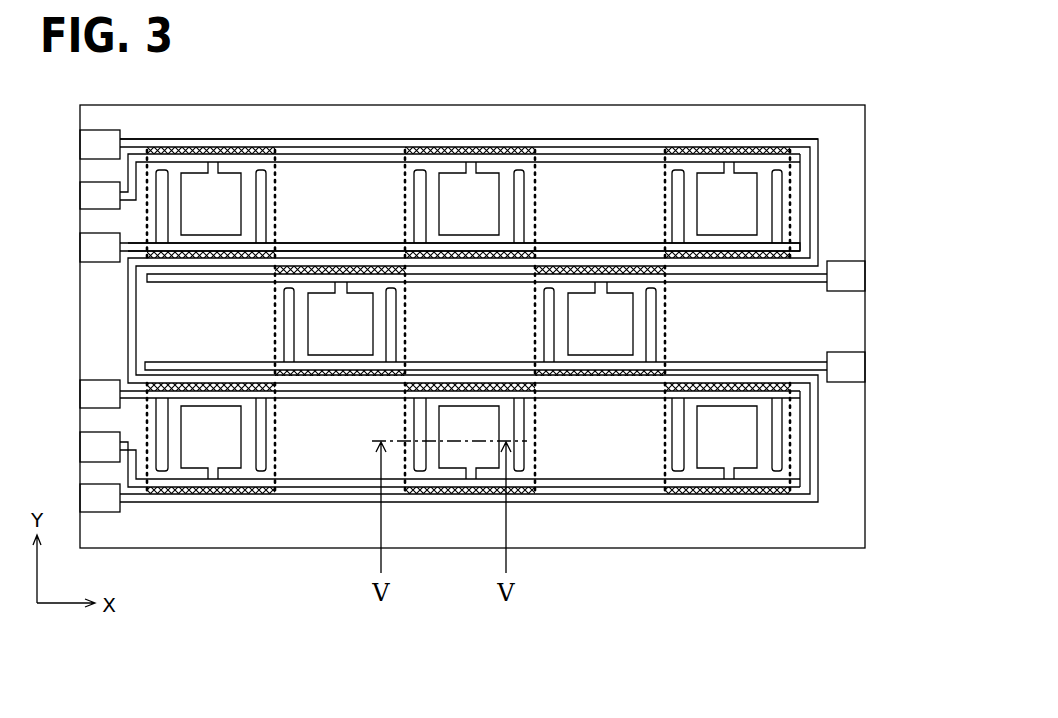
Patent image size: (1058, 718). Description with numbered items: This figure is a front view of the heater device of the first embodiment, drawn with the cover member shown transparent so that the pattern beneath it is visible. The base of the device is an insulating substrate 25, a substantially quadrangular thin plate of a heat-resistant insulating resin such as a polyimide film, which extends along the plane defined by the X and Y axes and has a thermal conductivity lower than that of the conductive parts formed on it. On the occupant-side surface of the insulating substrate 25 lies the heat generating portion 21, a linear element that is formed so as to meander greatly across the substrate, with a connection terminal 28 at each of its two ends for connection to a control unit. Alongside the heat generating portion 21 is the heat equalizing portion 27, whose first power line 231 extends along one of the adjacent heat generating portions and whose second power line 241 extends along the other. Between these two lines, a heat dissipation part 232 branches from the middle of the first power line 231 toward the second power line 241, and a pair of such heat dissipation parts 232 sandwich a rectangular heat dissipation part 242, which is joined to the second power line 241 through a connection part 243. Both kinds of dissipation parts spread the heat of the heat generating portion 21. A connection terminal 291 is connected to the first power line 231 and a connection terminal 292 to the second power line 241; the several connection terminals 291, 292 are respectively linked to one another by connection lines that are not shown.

The heat generating portion 21 is at (637, 139).
The insulating substrate 25 is at (790, 105).
The heat equalizing portion 27 is at (685, 139).
The connection terminal 28 is at (97, 130).
The first power line 231 is at (808, 238).
The heat dissipation part 232 is at (663, 222).
The second power line 241 is at (800, 170).
The heat dissipation part 242 is at (760, 190).
The connection part 243 is at (734, 165).
The connection terminal 291 is at (98, 233).
The connection terminal 292 is at (98, 182).